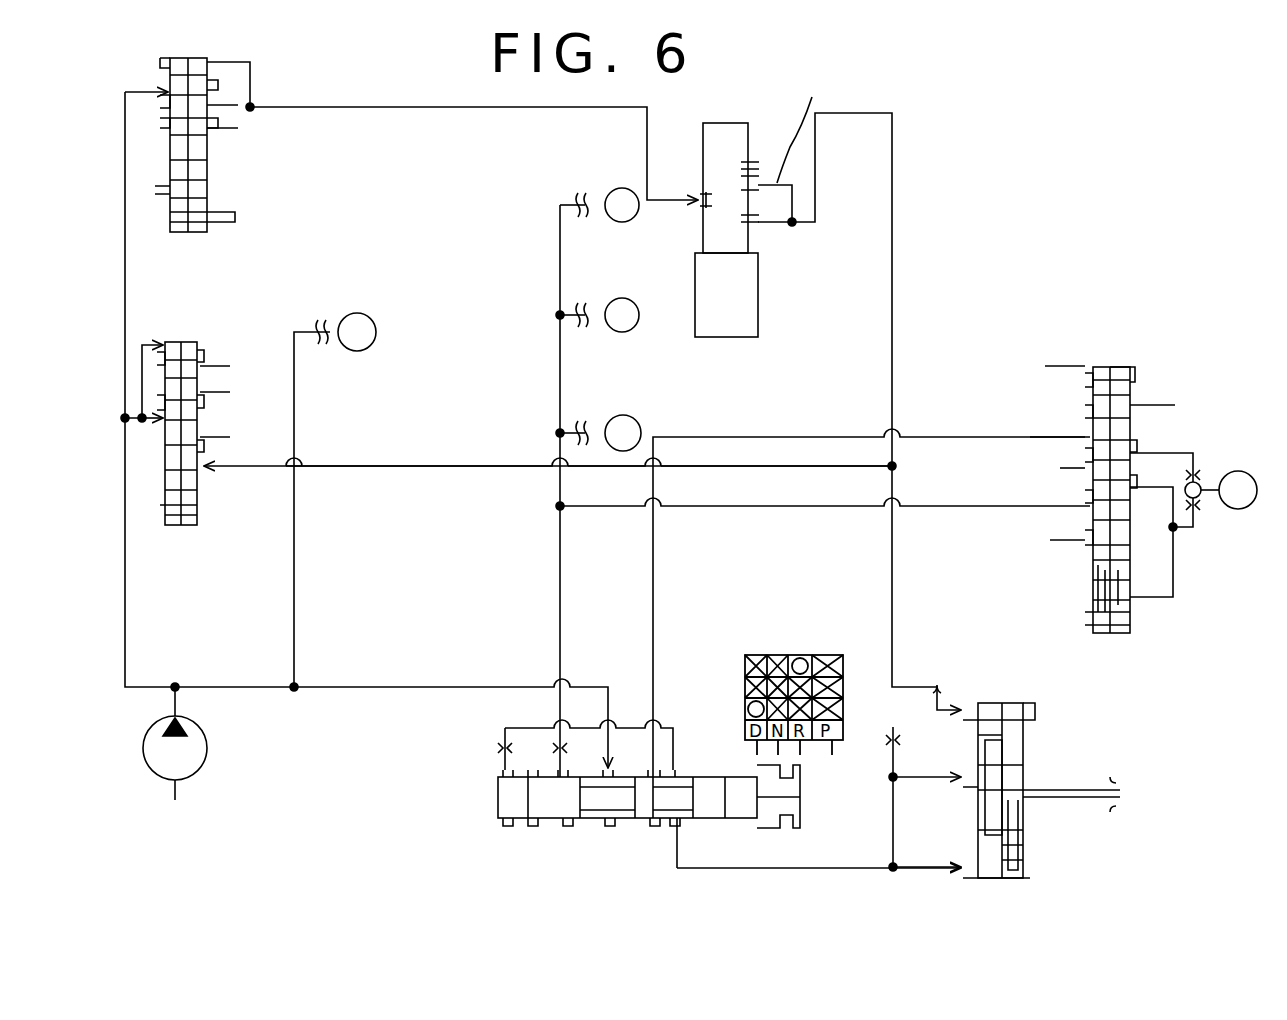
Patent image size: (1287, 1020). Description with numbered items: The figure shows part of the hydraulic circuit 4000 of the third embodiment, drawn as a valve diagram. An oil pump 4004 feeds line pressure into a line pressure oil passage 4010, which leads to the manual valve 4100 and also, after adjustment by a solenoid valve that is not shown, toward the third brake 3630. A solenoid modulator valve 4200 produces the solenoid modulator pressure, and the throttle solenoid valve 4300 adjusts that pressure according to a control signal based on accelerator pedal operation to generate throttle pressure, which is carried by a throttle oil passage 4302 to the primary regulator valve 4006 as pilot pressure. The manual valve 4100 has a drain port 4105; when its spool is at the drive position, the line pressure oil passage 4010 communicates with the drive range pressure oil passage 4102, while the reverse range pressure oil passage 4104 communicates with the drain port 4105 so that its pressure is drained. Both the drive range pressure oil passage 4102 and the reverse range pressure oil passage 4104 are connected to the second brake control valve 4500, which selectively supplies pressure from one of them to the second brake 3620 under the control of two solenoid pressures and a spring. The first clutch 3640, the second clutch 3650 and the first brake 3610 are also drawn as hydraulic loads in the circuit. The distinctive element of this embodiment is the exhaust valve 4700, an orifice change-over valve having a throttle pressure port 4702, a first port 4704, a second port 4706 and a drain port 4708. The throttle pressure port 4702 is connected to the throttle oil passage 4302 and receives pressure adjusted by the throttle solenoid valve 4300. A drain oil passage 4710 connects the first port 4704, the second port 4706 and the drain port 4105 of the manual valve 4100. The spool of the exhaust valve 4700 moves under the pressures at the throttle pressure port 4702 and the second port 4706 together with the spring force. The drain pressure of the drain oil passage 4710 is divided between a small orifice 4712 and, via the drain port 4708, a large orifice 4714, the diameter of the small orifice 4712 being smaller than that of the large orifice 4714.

The hydraulic circuit 4000 is at (1022, 90).
The solenoid modulator valve 4200 is at (187, 240).
The primary regulator valve 4006 is at (180, 527).
The line pressure oil passage 4010 is at (210, 687).
The oil pump 4004 is at (209, 736).
The B3 brake 3630 is at (349, 312).
The clutch C1 3640 is at (616, 188).
The clutch C2 3650 is at (614, 298).
The brake B1 3610 is at (616, 416).
The B2 brake 3620 is at (1236, 510).
The SLT solenoid valve 4300 is at (768, 240).
The SLT oil passage 4302 is at (855, 113).
The B2 control valve 4500 is at (1148, 377).
The R range pressure oil passage 4104 is at (967, 437).
The D range pressure oil passage 4102 is at (948, 506).
The manual valve 4100 is at (495, 807).
The drain port 4105 is at (685, 832).
The drain oil passage 4710 is at (768, 868).
The exhaust valve 4700 is at (1005, 696).
The SLT port 4702 is at (965, 700).
The first port 4704 is at (966, 780).
The second port 4706 is at (968, 866).
The drain port 4708 is at (1040, 813).
The small orifice 4712 is at (882, 750).
The large orifice 4714 is at (1123, 774).